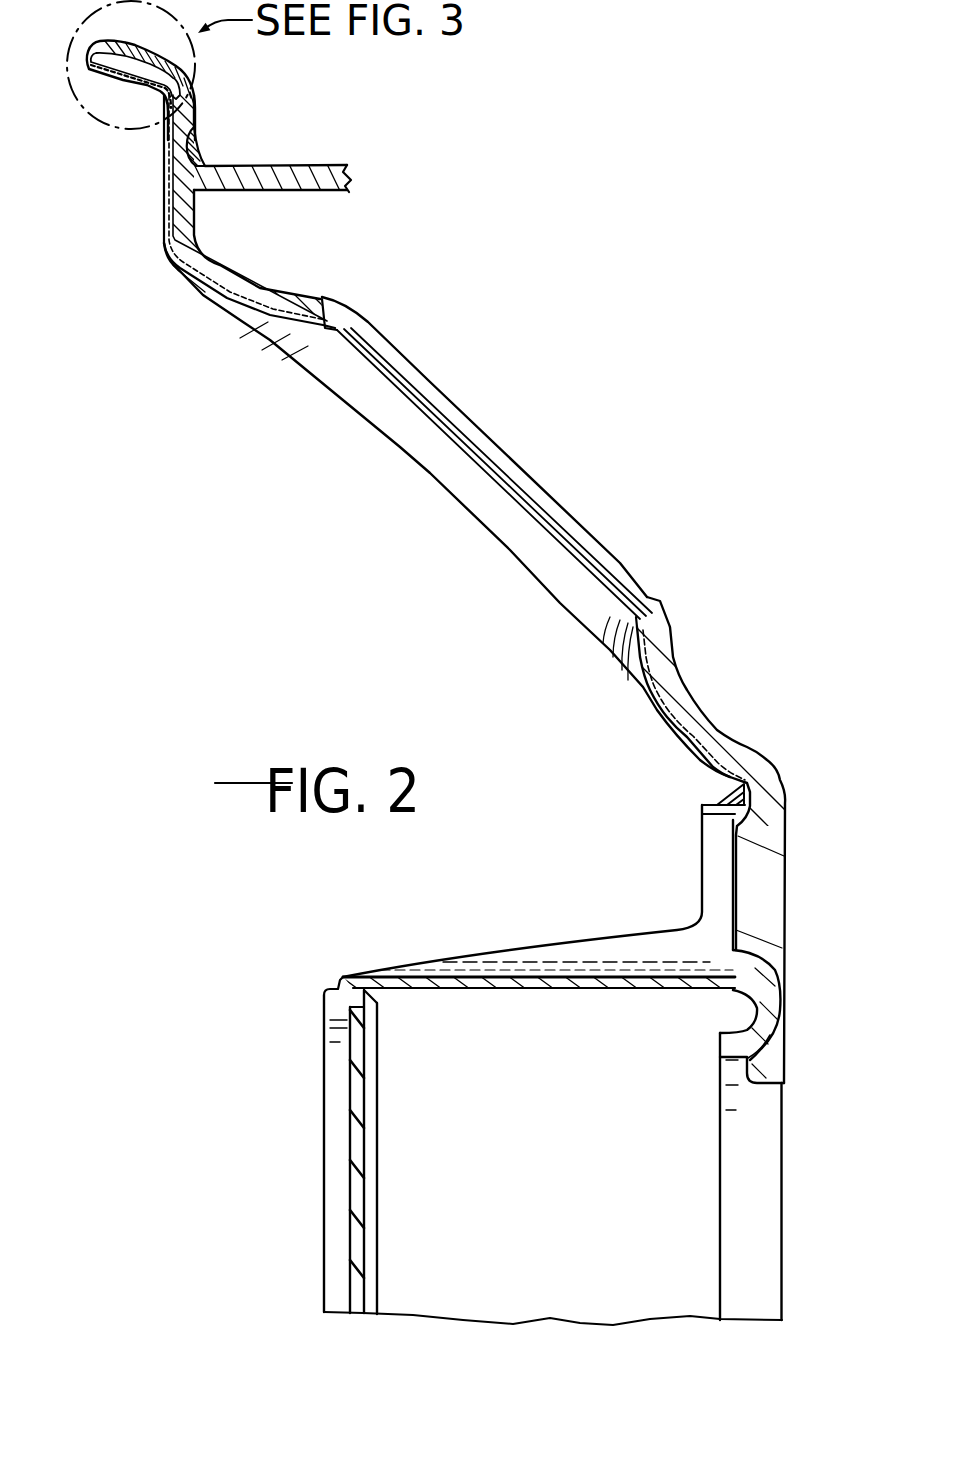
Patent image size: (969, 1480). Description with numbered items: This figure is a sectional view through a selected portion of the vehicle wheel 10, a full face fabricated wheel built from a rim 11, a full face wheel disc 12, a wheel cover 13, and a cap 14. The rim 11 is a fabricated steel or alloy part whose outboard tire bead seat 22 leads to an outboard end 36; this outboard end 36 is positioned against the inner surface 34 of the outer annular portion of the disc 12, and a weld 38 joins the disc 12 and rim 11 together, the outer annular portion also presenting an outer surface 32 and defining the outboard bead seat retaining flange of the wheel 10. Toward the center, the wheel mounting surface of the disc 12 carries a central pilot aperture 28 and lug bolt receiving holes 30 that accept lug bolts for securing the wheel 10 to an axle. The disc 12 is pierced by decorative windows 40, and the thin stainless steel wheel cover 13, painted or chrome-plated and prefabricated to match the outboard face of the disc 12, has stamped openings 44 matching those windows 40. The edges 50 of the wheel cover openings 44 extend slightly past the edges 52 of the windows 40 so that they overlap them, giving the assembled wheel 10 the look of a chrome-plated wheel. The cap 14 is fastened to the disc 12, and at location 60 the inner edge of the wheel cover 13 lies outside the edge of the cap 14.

The vehicle wheel 10 is at (552, 392).
The rim 11 is at (350, 155).
The full face wheel disc 12 is at (300, 280).
The wheel cover 13 is at (652, 735).
The cap 14 is at (310, 1191).
The outboard tire bead seat 22 is at (262, 163).
The pilot aperture 28 is at (762, 1083).
The lug bolt receiving holes 30 is at (737, 854).
The outer surface 32 is at (163, 240).
The inner surface 34 is at (194, 213).
The outboard end 36 is at (200, 178).
The weld 38 is at (202, 167).
The decorative windows 40 is at (670, 627).
The openings 44 is at (647, 597).
The edges of the wheel cover openings 50 is at (337, 332).
The edges of the windows 52 is at (335, 305).
The wheel cover inner edge location 60 is at (705, 783).